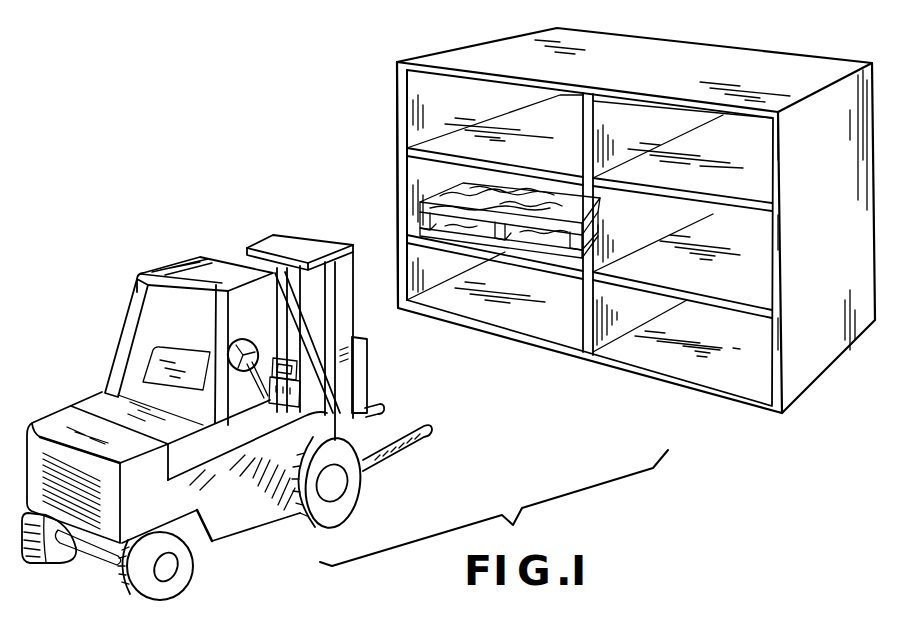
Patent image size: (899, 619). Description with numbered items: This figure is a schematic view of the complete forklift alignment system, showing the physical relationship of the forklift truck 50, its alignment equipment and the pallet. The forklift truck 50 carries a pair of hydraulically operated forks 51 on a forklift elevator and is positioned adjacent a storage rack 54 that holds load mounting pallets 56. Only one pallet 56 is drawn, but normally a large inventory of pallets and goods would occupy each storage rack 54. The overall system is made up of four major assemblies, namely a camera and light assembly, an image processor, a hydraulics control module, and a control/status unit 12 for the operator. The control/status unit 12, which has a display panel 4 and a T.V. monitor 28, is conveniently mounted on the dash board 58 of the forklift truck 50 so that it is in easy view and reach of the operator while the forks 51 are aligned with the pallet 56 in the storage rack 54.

The display panel 4 is at (265, 337).
The control/status unit 12 is at (275, 418).
The T.V. monitor 28 is at (288, 353).
The forklift truck 50 is at (163, 262).
The forks 51 is at (420, 441).
The storage rack 54 is at (724, 383).
The pallet 56 is at (403, 212).
The dash board 58 is at (310, 413).